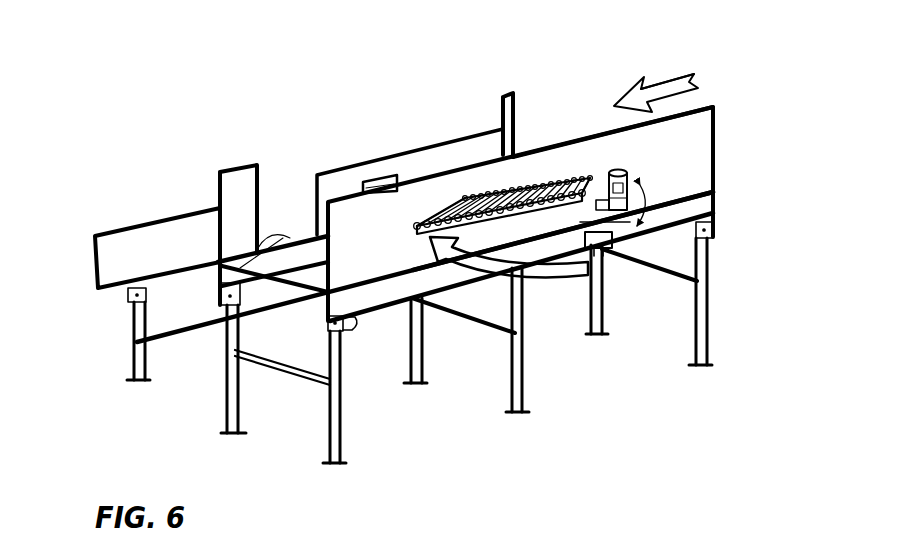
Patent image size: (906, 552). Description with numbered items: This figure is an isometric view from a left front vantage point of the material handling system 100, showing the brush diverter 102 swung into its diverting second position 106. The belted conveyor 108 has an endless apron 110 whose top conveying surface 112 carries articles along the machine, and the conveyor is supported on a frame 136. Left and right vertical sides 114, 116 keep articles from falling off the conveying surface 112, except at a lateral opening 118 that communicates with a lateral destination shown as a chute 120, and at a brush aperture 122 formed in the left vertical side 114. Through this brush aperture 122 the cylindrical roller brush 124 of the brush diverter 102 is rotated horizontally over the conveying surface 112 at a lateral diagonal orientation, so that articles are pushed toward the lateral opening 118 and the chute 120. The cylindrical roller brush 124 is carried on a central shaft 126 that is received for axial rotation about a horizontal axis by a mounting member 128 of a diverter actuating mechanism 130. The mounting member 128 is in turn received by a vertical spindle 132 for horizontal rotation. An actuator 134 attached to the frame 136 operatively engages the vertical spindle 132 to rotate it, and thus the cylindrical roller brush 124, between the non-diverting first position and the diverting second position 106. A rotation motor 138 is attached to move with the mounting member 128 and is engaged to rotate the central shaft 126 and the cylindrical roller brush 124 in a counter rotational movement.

The material handling system 100 is at (184, 51).
The brush diverter 102 is at (663, 188).
The diverting second position 106 is at (381, 128).
The belted conveyor 108 is at (313, 273).
The endless apron 110 is at (292, 303).
The top conveying surface 112 is at (290, 268).
The left vertical side 114 is at (708, 110).
The right vertical side 116 is at (512, 96).
The lateral opening 118 is at (236, 282).
The chute 120 is at (177, 238).
The brush aperture 122 is at (415, 265).
The cylindrical roller brush 124 is at (556, 183).
The central shaft 126 is at (628, 100).
The mounting member 128 is at (607, 222).
The diverter actuating mechanism 130 is at (631, 160).
The vertical spindle 132 is at (690, 95).
The actuator 134 is at (584, 238).
The frame 136 is at (392, 290).
The rotation motor 138 is at (627, 195).